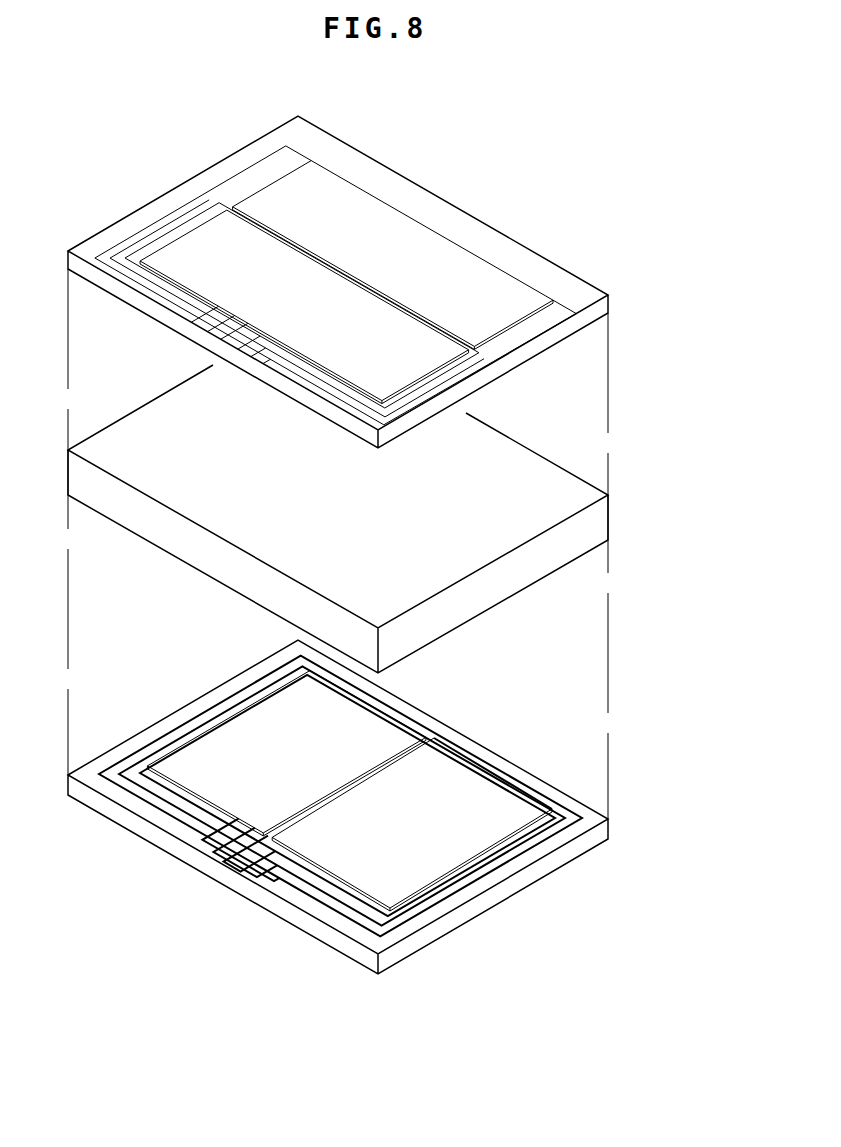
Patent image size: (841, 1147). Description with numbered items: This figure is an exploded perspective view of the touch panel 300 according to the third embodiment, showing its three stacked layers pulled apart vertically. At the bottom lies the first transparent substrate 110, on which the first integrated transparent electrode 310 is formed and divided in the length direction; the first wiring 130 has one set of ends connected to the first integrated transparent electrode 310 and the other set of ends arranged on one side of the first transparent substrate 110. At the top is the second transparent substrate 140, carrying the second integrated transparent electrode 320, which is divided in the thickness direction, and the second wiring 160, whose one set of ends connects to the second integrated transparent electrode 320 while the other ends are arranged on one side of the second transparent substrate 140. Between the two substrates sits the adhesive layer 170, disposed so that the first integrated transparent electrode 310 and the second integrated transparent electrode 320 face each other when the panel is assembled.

The touch panel 300 is at (82, 186).
The first transparent substrate 110 is at (600, 831).
The first wiring 130 is at (495, 881).
The second transparent substrate 140 is at (599, 304).
The second wiring 160 is at (520, 371).
The adhesive layer 170 is at (597, 522).
The first integrated transparent electrode 310 is at (500, 786).
The second integrated transparent electrode 320 is at (510, 291).